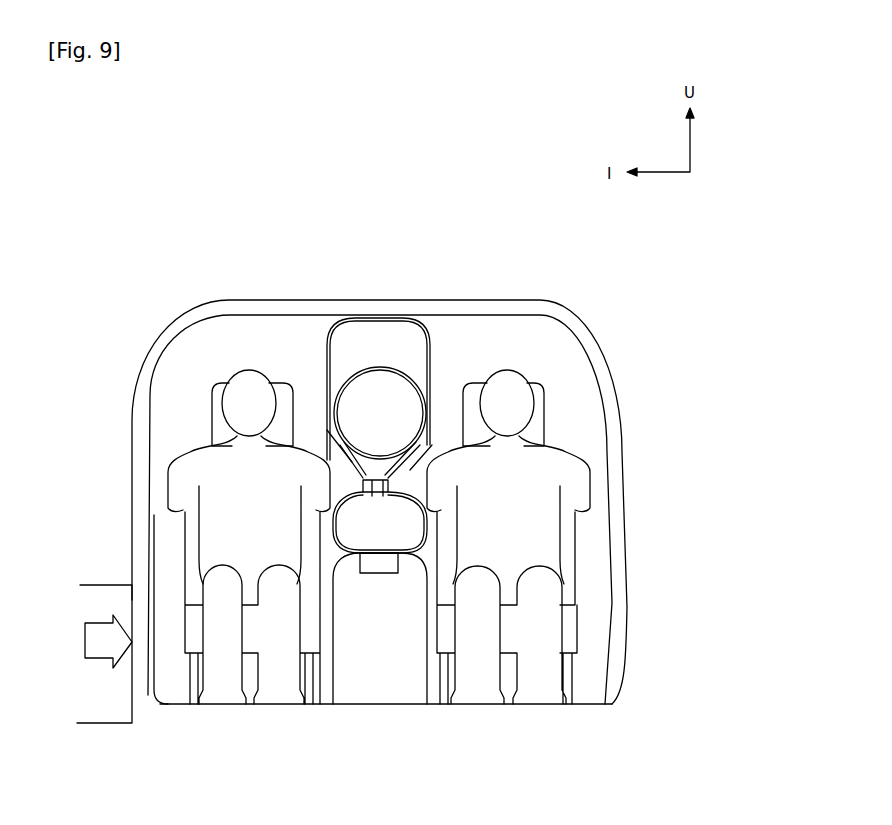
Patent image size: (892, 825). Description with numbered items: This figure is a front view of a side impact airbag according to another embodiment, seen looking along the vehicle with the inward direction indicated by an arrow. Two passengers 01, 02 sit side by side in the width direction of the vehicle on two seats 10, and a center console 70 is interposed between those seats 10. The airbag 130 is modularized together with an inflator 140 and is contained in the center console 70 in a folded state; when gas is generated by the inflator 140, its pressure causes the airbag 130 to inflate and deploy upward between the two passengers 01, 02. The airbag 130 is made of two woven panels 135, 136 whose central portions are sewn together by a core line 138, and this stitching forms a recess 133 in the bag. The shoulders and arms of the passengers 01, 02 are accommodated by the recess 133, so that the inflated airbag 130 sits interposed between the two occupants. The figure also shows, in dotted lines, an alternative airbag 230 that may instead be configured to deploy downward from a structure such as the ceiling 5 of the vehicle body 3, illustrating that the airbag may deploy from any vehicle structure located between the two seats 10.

The passenger 01 is at (245, 388).
The passenger 02 is at (512, 386).
The vehicle body 3 is at (622, 497).
The ceiling 5 is at (382, 306).
The seat 10 is at (182, 643).
The center console 70 is at (397, 677).
The airbag 130 is at (405, 370).
The recess 133 is at (433, 463).
The woven panel 135 is at (327, 430).
The woven panel 136 is at (428, 468).
The core line 138 is at (377, 497).
The inflator 140 is at (376, 565).
The airbag 230 is at (342, 333).